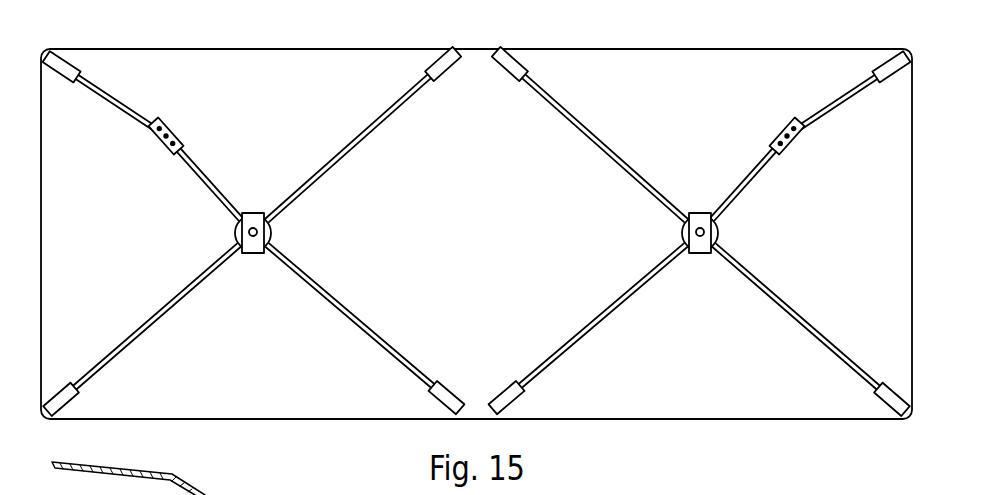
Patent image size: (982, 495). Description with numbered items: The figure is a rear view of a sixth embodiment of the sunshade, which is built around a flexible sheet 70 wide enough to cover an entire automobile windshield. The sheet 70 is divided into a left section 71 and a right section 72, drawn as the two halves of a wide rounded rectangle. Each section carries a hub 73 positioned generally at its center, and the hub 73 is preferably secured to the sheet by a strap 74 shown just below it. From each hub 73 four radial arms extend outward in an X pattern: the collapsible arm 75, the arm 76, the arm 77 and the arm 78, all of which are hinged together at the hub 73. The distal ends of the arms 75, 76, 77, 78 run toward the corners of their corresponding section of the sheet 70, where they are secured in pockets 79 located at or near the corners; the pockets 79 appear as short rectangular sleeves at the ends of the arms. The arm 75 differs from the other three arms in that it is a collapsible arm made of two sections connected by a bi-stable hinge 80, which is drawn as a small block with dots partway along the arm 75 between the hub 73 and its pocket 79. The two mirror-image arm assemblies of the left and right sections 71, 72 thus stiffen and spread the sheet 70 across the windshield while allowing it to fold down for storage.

The flexible sheet 70 is at (475, 54).
The left section 71 is at (265, 50).
The right section 72 is at (698, 50).
The hub 73 is at (265, 232).
The strap 74 is at (254, 254).
The collapsible arm 75 is at (192, 175).
The radial arm 76 is at (147, 323).
The radial arm 77 is at (361, 322).
The radial arm 78 is at (359, 145).
The pocket 79 is at (64, 82).
The bi-stable hinge 80 is at (155, 141).